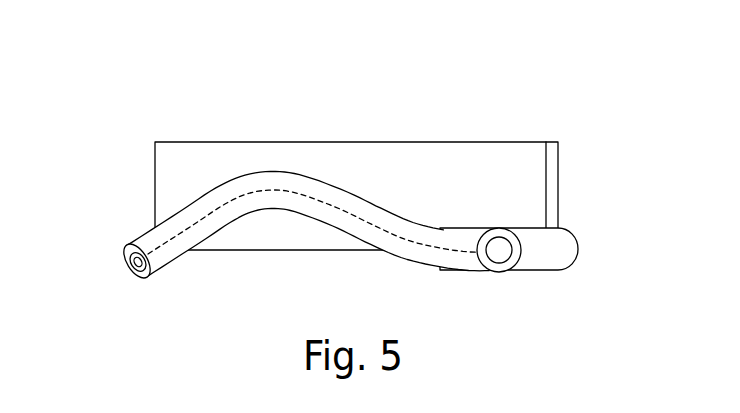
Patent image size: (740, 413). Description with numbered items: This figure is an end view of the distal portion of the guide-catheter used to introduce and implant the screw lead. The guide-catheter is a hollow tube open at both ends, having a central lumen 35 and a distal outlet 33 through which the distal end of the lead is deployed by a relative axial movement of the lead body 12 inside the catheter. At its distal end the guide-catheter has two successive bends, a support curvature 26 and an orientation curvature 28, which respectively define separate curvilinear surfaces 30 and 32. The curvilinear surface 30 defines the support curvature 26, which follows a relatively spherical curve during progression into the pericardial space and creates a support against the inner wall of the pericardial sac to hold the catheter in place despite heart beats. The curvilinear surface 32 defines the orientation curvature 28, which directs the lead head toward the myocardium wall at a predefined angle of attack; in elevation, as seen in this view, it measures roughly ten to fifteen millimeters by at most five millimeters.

The lead body 12 is at (511, 233).
The support curvature 26 is at (553, 258).
The orientation curvature 28 is at (262, 230).
The curvilinear surface 30 is at (523, 160).
The curvilinear surface 32 is at (203, 210).
The distal outlet 33 is at (130, 263).
The central lumen 35 is at (498, 252).